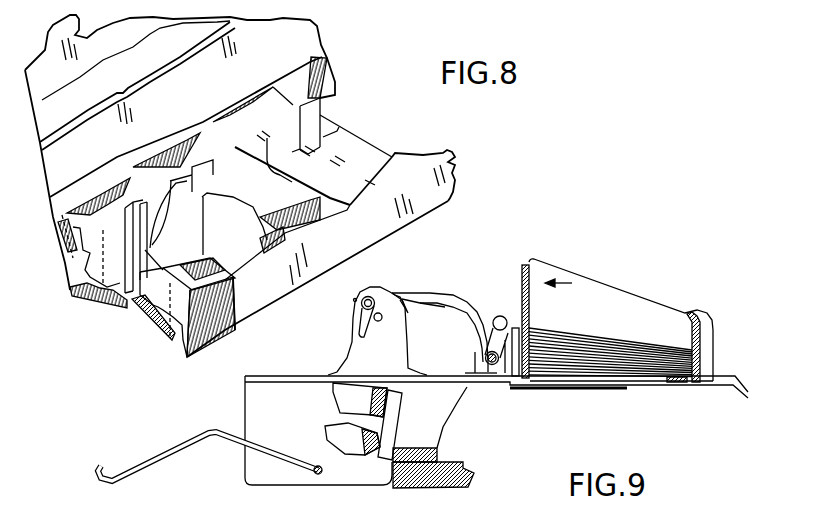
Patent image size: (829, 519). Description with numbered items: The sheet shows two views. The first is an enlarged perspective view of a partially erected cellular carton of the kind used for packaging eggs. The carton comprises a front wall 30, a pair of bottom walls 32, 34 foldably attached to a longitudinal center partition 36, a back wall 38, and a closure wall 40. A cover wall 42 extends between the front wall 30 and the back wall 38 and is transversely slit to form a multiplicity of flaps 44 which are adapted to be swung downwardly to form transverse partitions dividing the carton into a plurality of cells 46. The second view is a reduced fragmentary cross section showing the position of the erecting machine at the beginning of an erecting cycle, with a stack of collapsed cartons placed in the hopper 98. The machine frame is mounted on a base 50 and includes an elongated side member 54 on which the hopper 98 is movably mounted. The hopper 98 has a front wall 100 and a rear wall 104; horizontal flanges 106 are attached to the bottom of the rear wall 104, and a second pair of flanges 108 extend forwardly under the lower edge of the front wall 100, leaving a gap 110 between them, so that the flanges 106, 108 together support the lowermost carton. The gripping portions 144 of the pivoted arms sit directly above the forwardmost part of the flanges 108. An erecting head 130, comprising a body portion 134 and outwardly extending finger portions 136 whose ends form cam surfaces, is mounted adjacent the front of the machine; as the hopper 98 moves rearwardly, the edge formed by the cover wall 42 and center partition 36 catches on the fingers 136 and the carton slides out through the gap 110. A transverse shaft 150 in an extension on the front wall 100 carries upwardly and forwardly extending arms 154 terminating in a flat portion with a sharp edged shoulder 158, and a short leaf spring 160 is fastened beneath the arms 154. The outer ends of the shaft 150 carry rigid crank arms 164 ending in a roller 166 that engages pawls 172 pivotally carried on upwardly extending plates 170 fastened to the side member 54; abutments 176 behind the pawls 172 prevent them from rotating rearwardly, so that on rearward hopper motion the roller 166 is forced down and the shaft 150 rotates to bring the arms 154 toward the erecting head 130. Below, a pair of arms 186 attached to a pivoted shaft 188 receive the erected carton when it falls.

In FIG. 8, the front wall 30 is at (358, 248).
In FIG. 8, the bottom wall 32 is at (164, 332).
In FIG. 8, the bottom wall 34 is at (98, 298).
In FIG. 8, the longitudinal center partition 36 is at (189, 185).
In FIG. 8, the back wall 38 is at (72, 276).
In FIG. 8, the closure wall 40 is at (64, 119).
In FIG. 9, the closure wall 40 is at (653, 343).
In FIG. 8, the cover wall 42 is at (388, 160).
In FIG. 8, the flaps 44 is at (328, 163).
In FIG. 8, the cells 46 is at (117, 227).
In FIG. 9, the base 50 is at (468, 488).
In FIG. 9, the side member 54 is at (346, 478).
In FIG. 9, the hopper 98 is at (619, 285).
In FIG. 9, the front wall 100 is at (521, 270).
In FIG. 9, the rear wall 104 is at (703, 340).
In FIG. 9, the flanges 106 is at (688, 384).
In FIG. 9, the flanges 108 is at (580, 388).
In FIG. 9, the gap 110 is at (505, 383).
In FIG. 9, the erecting head 130 is at (330, 414).
In FIG. 9, the body portion 134 is at (380, 437).
In FIG. 9, the finger portions 136 is at (342, 387).
In FIG. 9, the gripping portions 144 is at (489, 377).
In FIG. 9, the transverse shaft 150 is at (485, 358).
In FIG. 9, the arms 154 is at (428, 293).
In FIG. 9, the sharp edged shoulder 158 is at (406, 304).
In FIG. 9, the leaf spring 160 is at (443, 308).
In FIG. 9, the crank arms 164 is at (490, 337).
In FIG. 9, the roller 166 is at (499, 316).
In FIG. 9, the plates 170 is at (352, 339).
In FIG. 9, the pawls 172 is at (361, 316).
In FIG. 9, the abutments 176 is at (379, 324).
In FIG. 9, the arms 186 is at (165, 462).
In FIG. 9, the shaft 188 is at (314, 474).